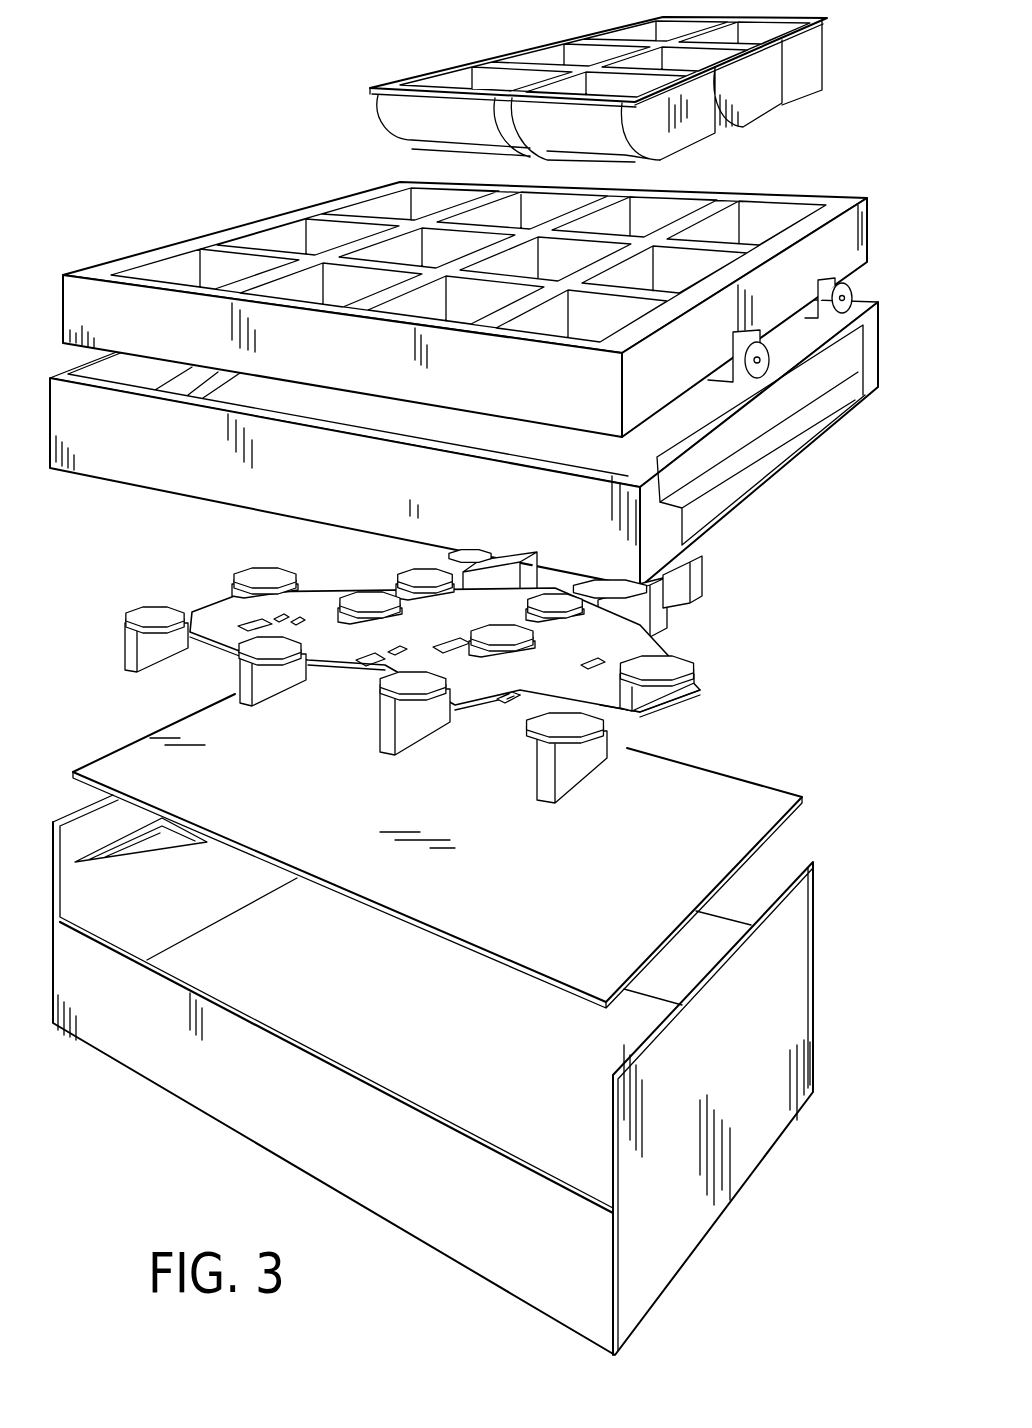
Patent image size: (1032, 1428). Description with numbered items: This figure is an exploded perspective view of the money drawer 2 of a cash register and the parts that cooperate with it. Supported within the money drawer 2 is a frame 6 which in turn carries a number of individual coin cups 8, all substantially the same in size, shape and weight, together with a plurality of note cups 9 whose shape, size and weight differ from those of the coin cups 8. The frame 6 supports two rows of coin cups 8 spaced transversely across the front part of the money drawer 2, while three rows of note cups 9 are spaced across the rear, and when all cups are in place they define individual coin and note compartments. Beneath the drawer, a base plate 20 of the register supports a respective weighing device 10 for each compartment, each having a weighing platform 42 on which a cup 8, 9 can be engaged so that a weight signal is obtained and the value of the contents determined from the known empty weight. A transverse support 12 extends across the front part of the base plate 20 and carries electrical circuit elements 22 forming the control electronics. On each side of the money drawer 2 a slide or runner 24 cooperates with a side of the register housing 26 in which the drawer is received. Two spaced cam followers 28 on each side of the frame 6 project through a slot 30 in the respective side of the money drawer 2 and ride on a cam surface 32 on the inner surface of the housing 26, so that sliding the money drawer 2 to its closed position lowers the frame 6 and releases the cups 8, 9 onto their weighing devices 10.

The money drawer 2 is at (326, 495).
The frame 6 is at (147, 313).
The coin cups 8 is at (595, 96).
The note cups 9 is at (803, 73).
The weighing device 10 is at (456, 702).
The transverse support 12 is at (638, 707).
The base plate 20 is at (552, 898).
The electrical circuit elements 22 is at (505, 702).
The slide or runner 24 is at (803, 382).
The register housing 26 is at (483, 1075).
The cam followers 28 is at (727, 377).
The slot 30 is at (753, 463).
The cam surface 32 is at (152, 858).
The weighing platform 42 is at (573, 732).